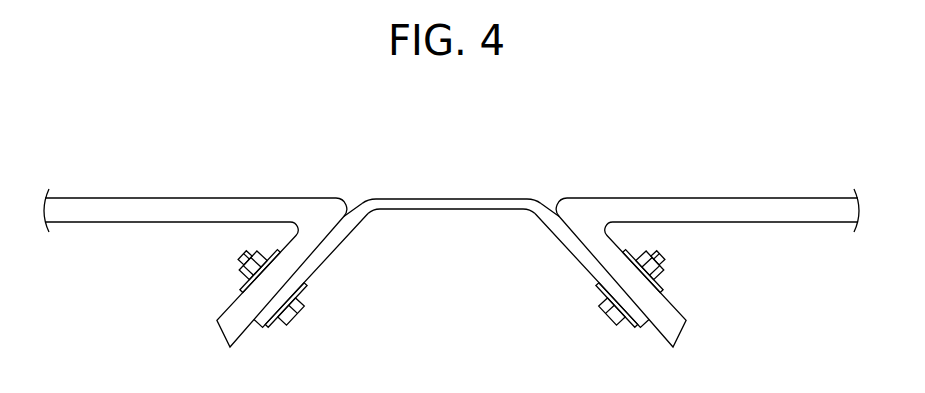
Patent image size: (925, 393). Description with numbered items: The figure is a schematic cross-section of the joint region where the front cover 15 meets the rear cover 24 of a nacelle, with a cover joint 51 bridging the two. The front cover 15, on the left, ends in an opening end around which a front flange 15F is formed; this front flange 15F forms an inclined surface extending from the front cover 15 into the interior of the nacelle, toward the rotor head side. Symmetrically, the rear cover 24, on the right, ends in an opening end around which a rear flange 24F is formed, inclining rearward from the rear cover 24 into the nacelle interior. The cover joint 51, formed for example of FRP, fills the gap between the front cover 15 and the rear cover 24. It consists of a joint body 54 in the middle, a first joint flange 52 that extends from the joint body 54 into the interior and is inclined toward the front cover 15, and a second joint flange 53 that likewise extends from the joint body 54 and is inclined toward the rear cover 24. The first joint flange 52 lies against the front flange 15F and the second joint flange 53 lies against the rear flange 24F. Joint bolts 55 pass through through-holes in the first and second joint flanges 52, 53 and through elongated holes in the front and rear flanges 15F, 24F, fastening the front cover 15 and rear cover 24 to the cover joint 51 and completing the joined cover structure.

The front cover 15 is at (105, 201).
The front flange 15F is at (222, 321).
The rear cover 24 is at (800, 204).
The rear flange 24F is at (681, 322).
The cover joint 51 is at (451, 219).
The first joint flange 52 is at (330, 250).
The second joint flange 53 is at (573, 270).
The joint body 54 is at (473, 210).
The joint bolt 55 is at (229, 259).